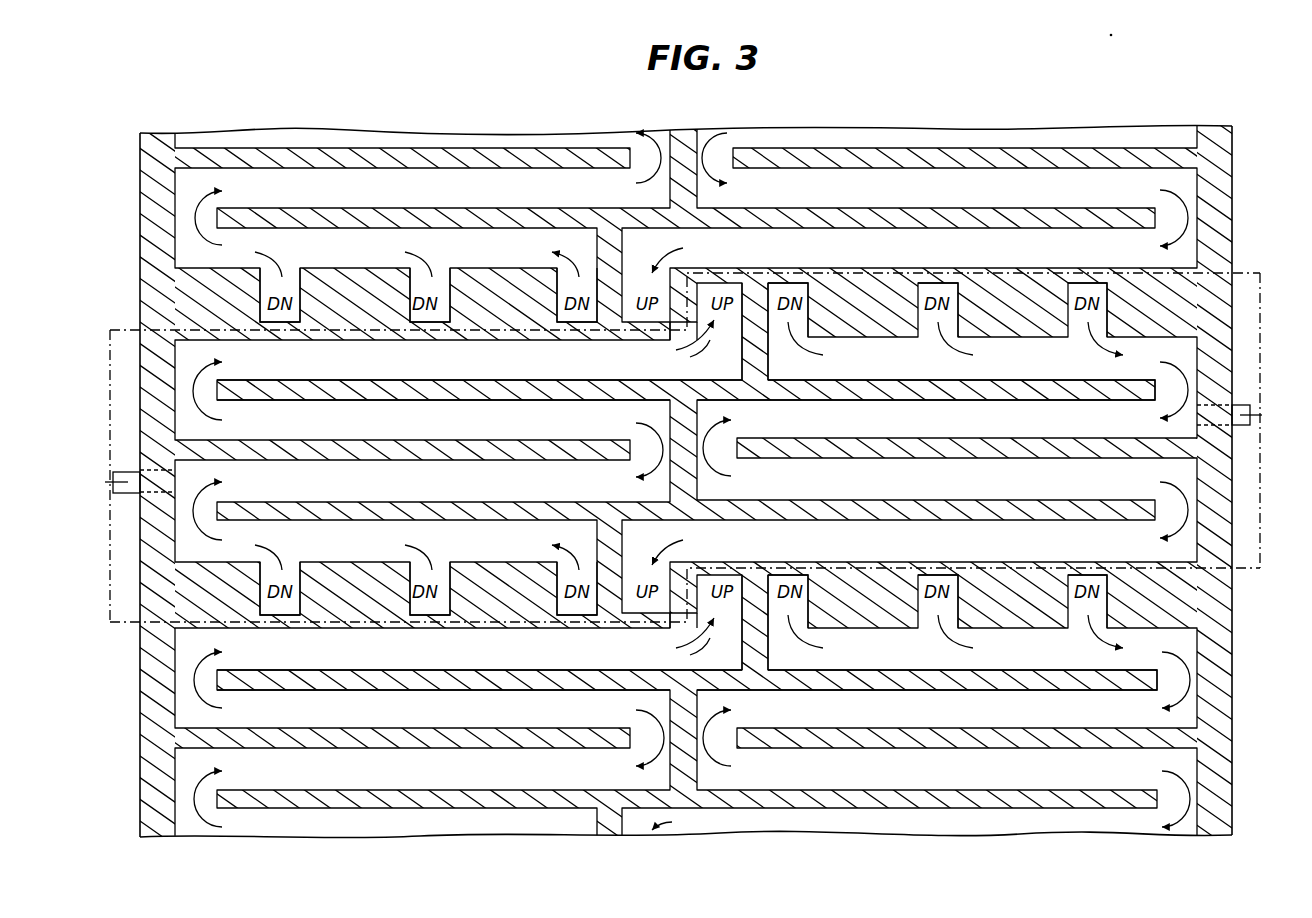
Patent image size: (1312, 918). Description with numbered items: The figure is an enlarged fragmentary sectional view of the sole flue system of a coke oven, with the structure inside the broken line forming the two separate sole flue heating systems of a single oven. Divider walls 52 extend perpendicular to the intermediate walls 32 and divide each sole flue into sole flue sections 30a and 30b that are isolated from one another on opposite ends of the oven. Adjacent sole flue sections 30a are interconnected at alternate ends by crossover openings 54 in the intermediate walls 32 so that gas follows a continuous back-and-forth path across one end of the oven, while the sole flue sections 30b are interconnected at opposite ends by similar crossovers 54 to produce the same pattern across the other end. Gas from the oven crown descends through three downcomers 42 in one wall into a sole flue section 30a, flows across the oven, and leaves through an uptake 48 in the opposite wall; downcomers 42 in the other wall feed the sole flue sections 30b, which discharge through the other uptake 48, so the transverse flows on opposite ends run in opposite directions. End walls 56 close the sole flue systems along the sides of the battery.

The sole flue section 30a is at (944, 722).
The sole flue section 30b is at (491, 781).
The intermediate wall 32 is at (1032, 737).
The downcomer 42 is at (560, 603).
The uptake 48 is at (683, 627).
The divider wall 52 is at (740, 653).
The crossover opening 54 is at (1160, 512).
The end wall 56 is at (1222, 707).